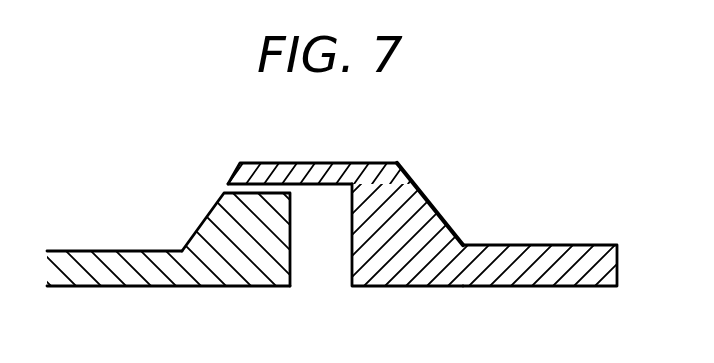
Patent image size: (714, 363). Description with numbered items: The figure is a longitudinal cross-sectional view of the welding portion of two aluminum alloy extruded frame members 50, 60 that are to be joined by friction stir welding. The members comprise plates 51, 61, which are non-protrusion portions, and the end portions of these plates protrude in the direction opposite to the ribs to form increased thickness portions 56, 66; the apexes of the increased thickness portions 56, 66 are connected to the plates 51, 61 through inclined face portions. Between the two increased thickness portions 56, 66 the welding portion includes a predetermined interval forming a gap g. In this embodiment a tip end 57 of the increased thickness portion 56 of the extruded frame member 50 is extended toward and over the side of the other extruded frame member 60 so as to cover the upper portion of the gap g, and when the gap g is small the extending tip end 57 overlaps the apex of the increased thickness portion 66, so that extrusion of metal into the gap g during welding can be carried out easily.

The extruded frame member 50 is at (545, 160).
The plate 51 is at (557, 255).
The increased thickness portion 56 is at (423, 210).
The tip end 57 is at (278, 165).
The extruded frame member 60 is at (91, 150).
The plate 61 is at (80, 263).
The increased thickness portion 66 is at (210, 228).
The gap g is at (320, 270).